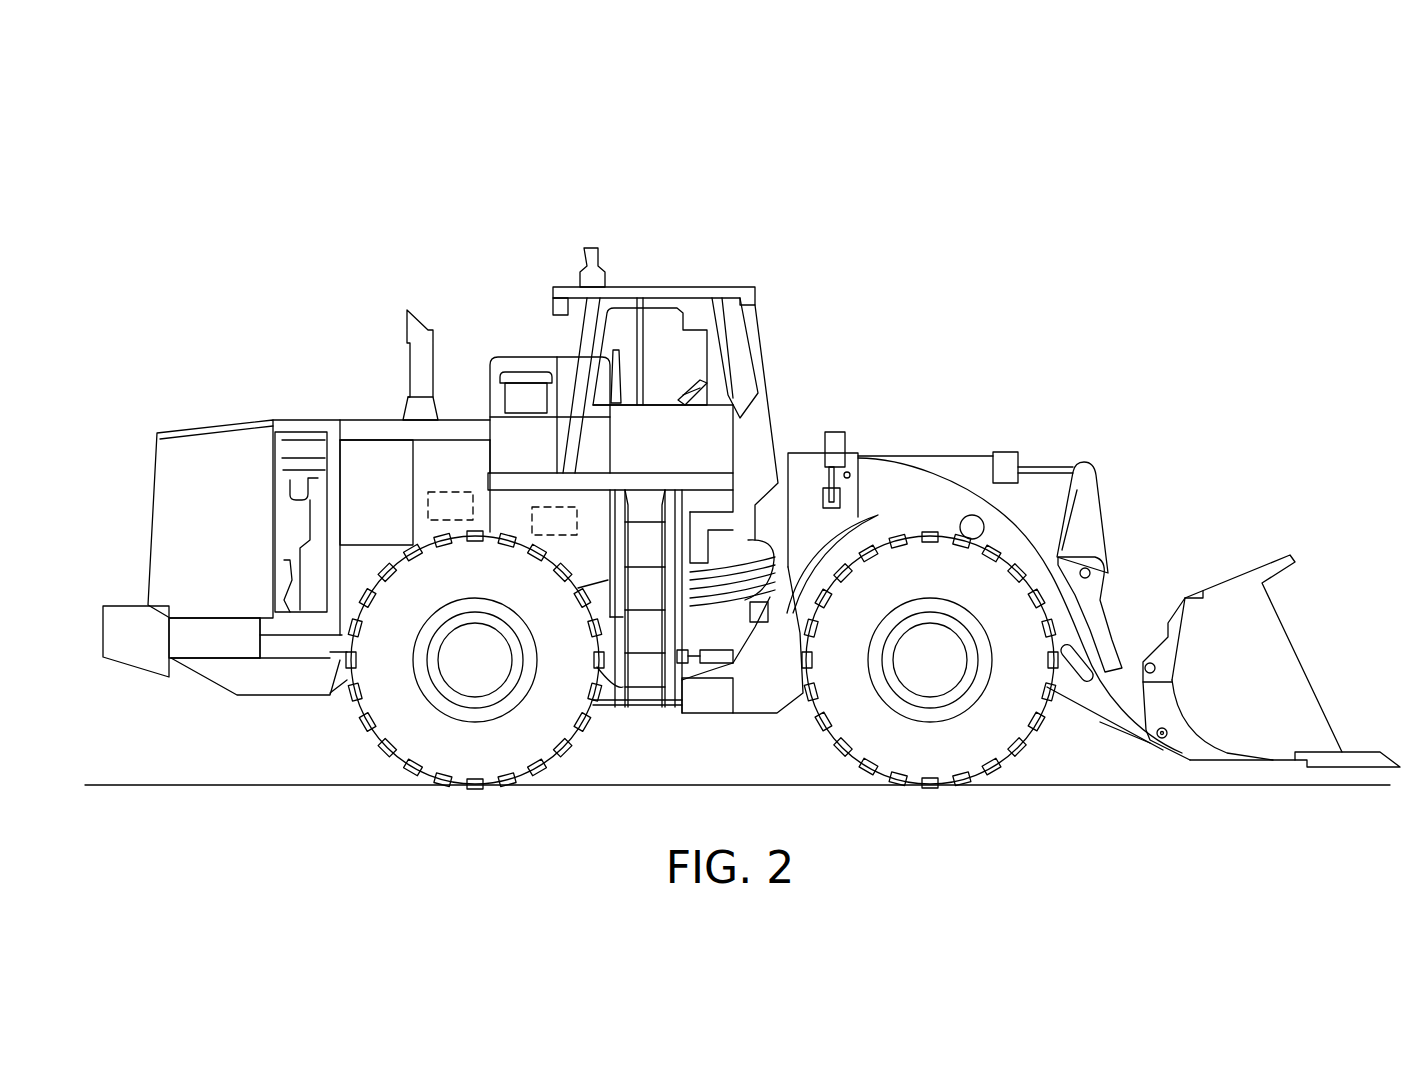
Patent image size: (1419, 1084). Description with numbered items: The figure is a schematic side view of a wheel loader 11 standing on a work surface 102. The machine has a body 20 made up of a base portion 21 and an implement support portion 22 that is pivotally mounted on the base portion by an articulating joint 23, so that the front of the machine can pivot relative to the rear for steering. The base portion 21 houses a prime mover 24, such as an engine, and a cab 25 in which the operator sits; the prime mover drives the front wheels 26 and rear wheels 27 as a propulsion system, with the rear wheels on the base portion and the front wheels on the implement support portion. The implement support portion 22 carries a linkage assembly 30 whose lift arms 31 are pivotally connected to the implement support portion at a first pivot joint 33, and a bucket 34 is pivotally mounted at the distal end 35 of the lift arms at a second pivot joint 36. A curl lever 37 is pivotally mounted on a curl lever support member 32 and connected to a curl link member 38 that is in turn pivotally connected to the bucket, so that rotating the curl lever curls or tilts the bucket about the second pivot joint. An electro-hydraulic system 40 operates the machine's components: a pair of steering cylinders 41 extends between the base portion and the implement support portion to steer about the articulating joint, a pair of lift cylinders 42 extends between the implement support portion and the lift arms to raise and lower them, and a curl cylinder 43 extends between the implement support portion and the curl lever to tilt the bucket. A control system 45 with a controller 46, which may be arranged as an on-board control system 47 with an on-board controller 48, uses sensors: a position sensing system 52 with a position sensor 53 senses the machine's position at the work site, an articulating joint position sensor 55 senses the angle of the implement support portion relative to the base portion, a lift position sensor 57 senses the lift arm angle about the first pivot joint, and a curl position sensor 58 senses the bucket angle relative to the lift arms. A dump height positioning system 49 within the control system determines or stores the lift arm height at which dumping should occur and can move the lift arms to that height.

The wheel loader 11 is at (902, 238).
The body 20 is at (357, 430).
The base portion 21 is at (215, 670).
The implement support portion 22 is at (763, 693).
The articulating joint 23 is at (585, 755).
The prime mover 24 is at (188, 417).
The cab 25 is at (662, 287).
The front wheels 26 is at (920, 760).
The rear wheels 27 is at (455, 765).
The linkage assembly 30 is at (1055, 368).
The lift arms 31 is at (1107, 630).
The curl lever support member 32 is at (1070, 567).
The first pivot joint 33 is at (848, 440).
The bucket 34 is at (1275, 680).
The distal end 35 is at (1125, 713).
The second pivot joint 36 is at (1162, 740).
The curl lever 37 is at (1078, 520).
The curl link member 38 is at (1127, 667).
The electro-hydraulic system 40 is at (977, 350).
The steering cylinders 41 is at (735, 645).
The lift cylinders 42 is at (800, 428).
The curl cylinder 43 is at (968, 455).
The control system 45 is at (267, 287).
The controller 46 is at (337, 283).
The on-board control system 47 is at (403, 265).
The on-board controller 48 is at (451, 490).
The dump height positioning system 49 is at (415, 217).
The position sensing system 52 is at (447, 260).
The position sensor 53 is at (557, 507).
The articulating joint position sensor 55 is at (632, 753).
The lift position sensor 57 is at (1130, 382).
The curl position sensor 58 is at (1248, 528).
The work surface 102 is at (187, 785).